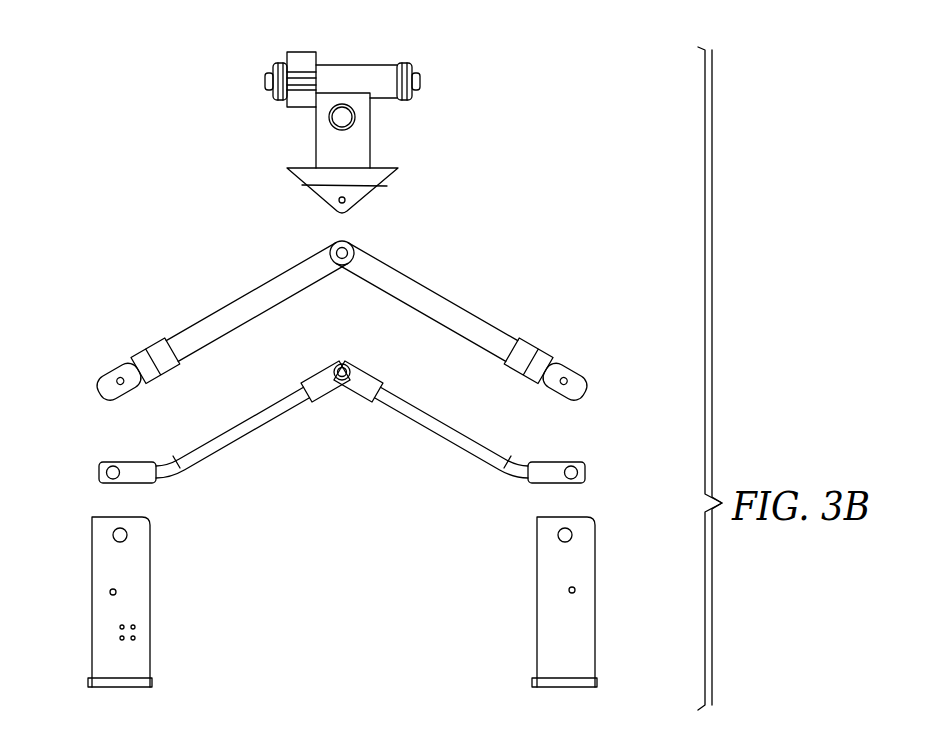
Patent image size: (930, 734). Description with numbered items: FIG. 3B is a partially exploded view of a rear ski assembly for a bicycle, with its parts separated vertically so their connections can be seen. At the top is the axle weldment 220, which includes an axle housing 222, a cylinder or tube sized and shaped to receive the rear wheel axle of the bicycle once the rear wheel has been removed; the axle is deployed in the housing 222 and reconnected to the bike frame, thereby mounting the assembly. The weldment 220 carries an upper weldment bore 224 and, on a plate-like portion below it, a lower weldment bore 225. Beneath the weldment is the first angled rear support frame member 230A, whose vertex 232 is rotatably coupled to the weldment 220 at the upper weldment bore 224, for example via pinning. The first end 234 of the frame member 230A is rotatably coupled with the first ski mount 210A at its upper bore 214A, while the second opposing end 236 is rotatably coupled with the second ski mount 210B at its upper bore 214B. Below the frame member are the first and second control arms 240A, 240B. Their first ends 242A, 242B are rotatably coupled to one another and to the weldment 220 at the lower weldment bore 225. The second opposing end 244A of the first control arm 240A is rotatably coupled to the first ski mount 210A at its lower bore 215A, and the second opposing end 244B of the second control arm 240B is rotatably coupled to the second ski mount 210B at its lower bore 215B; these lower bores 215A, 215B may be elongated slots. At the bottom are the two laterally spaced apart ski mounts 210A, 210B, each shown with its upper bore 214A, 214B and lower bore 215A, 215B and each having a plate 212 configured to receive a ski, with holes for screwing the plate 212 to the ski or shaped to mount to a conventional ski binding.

The axle housing 222 is at (355, 63).
The axle weldment 220 is at (372, 132).
The upper weldment bore 224 is at (340, 118).
The lower weldment bore 225 is at (345, 200).
The vertex 232 is at (336, 246).
The first angled rear support frame member 230A is at (232, 302).
The first end of frame member 234 is at (113, 368).
The second end of frame member 236 is at (573, 367).
The first end of first control arm 242A is at (320, 362).
The first end of second control arm 242B is at (395, 357).
The first control arm 240A is at (247, 437).
The second control arm 240B is at (440, 437).
The second end of first control arm 244A is at (130, 465).
The second end of second control arm 244B is at (557, 463).
The first ski mount 210A is at (138, 605).
The second ski mount 210B is at (549, 605).
The upper bore of first ski mount 214A is at (128, 536).
The upper bore of second ski mount 214B is at (557, 535).
The lower bore of first ski mount 215A is at (110, 592).
The lower bore of second ski mount 215B is at (576, 590).
The plate 212 is at (107, 688).